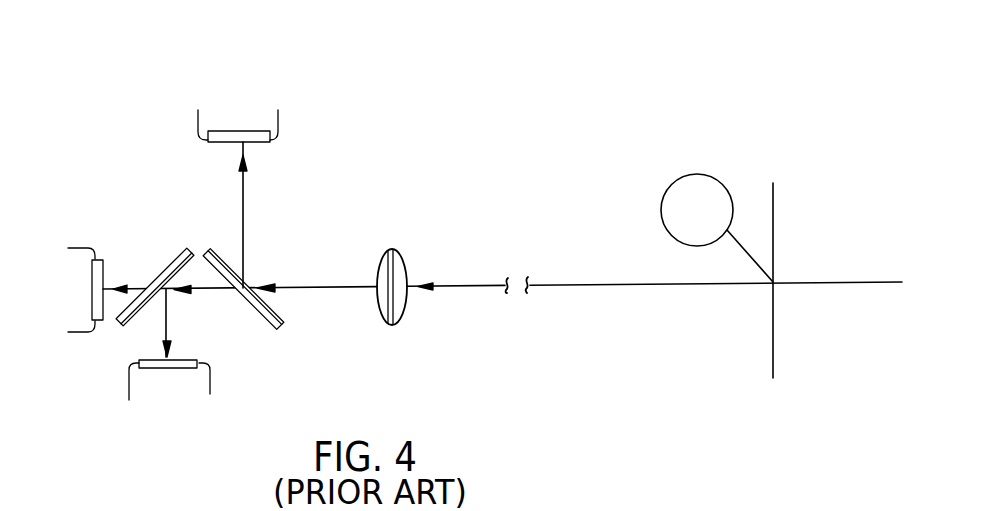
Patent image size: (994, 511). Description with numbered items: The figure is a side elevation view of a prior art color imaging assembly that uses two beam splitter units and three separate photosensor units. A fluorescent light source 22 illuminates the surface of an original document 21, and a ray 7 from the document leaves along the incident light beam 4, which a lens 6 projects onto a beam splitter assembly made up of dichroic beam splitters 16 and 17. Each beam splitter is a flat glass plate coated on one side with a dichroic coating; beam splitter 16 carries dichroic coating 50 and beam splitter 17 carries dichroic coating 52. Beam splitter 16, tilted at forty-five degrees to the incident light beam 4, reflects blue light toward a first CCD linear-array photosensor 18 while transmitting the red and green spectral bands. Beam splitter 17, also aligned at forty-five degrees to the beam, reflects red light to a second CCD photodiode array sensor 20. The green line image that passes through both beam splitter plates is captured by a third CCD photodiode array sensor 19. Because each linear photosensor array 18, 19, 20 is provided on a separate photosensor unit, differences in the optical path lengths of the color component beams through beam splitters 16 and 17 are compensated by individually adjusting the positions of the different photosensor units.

The incident light beam 4 is at (613, 284).
The lens 6 is at (399, 255).
The light ray from source 7 is at (770, 286).
The dichroic beam splitter 16 is at (279, 312).
The dichroic beam splitter 17 is at (172, 258).
The first CCD linear-array photosensor 18 is at (230, 132).
The third CCD photodiode array sensor 19 is at (92, 289).
The second CCD photodiode array sensor 20 is at (180, 369).
The original document 21 is at (772, 365).
The fluorescent light source 22 is at (668, 182).
The dichroic coating 50 is at (218, 256).
The dichroic coating 52 is at (130, 322).